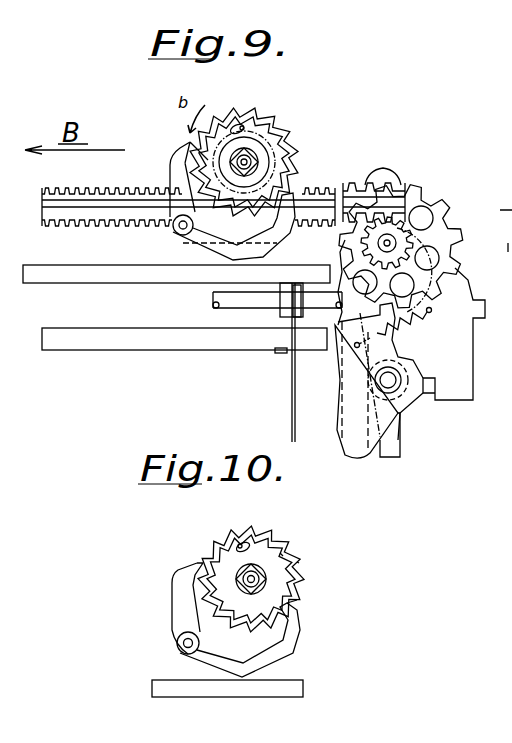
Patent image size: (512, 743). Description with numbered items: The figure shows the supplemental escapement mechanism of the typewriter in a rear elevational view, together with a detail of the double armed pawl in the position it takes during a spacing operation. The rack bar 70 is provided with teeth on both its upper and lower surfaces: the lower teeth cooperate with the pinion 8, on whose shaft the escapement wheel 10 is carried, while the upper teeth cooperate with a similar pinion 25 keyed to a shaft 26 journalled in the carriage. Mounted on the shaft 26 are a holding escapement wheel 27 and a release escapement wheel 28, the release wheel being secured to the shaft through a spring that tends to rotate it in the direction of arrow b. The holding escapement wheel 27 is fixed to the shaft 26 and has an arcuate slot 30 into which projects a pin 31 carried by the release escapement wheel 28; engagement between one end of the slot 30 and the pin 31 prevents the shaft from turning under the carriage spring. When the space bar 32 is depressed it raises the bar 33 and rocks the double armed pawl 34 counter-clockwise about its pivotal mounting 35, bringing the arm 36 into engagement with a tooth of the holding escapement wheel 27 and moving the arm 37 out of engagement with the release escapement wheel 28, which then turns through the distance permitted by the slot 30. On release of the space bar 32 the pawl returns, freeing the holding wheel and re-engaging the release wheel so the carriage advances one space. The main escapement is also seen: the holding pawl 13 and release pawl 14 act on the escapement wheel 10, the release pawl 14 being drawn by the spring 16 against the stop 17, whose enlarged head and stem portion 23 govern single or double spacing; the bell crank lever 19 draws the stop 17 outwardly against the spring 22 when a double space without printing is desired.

In FIG. 9, the pinion 8 is at (398, 232).
In FIG. 9, the escapement wheel 10 is at (448, 217).
In FIG. 9, the holding pawl 13 is at (338, 366).
In FIG. 9, the release pawl 14 is at (338, 398).
In FIG. 9, the spring 16 is at (432, 317).
In FIG. 9, the stop 17 is at (393, 356).
In FIG. 9, the bell crank lever 19 is at (398, 450).
In FIG. 9, the spring 22 is at (390, 395).
In FIG. 9, the stem portion 23 is at (400, 383).
In FIG. 9, the pinion 25 is at (277, 125).
In FIG. 10, the pinion 25 is at (251, 579).
In FIG. 9, the shaft 26 is at (258, 162).
In FIG. 10, the shaft 26 is at (254, 574).
In FIG. 9, the holding escapement wheel 27 is at (283, 138).
In FIG. 10, the holding escapement wheel 27 is at (280, 553).
In FIG. 9, the release escapement wheel 28 is at (295, 142).
In FIG. 10, the release escapement wheel 28 is at (297, 562).
In FIG. 9, the arcuate slot 30 is at (238, 125).
In FIG. 10, the arcuate slot 30 is at (245, 545).
In FIG. 9, the pin 31 is at (242, 128).
In FIG. 10, the pin 31 is at (235, 547).
In FIG. 9, the space bar 32 is at (207, 340).
In FIG. 9, the bar 33 is at (177, 275).
In FIG. 10, the bar 33 is at (285, 688).
In FIG. 9, the double armed pawl 34 is at (293, 237).
In FIG. 10, the double armed pawl 34 is at (283, 650).
In FIG. 9, the pivotal mounting 35 is at (177, 232).
In FIG. 10, the pivotal mounting 35 is at (178, 647).
In FIG. 9, the arm 36 is at (287, 193).
In FIG. 10, the arm 36 is at (297, 600).
In FIG. 9, the arm 37 is at (188, 150).
In FIG. 10, the arm 37 is at (185, 572).
In FIG. 9, the rack bar 70 is at (400, 190).